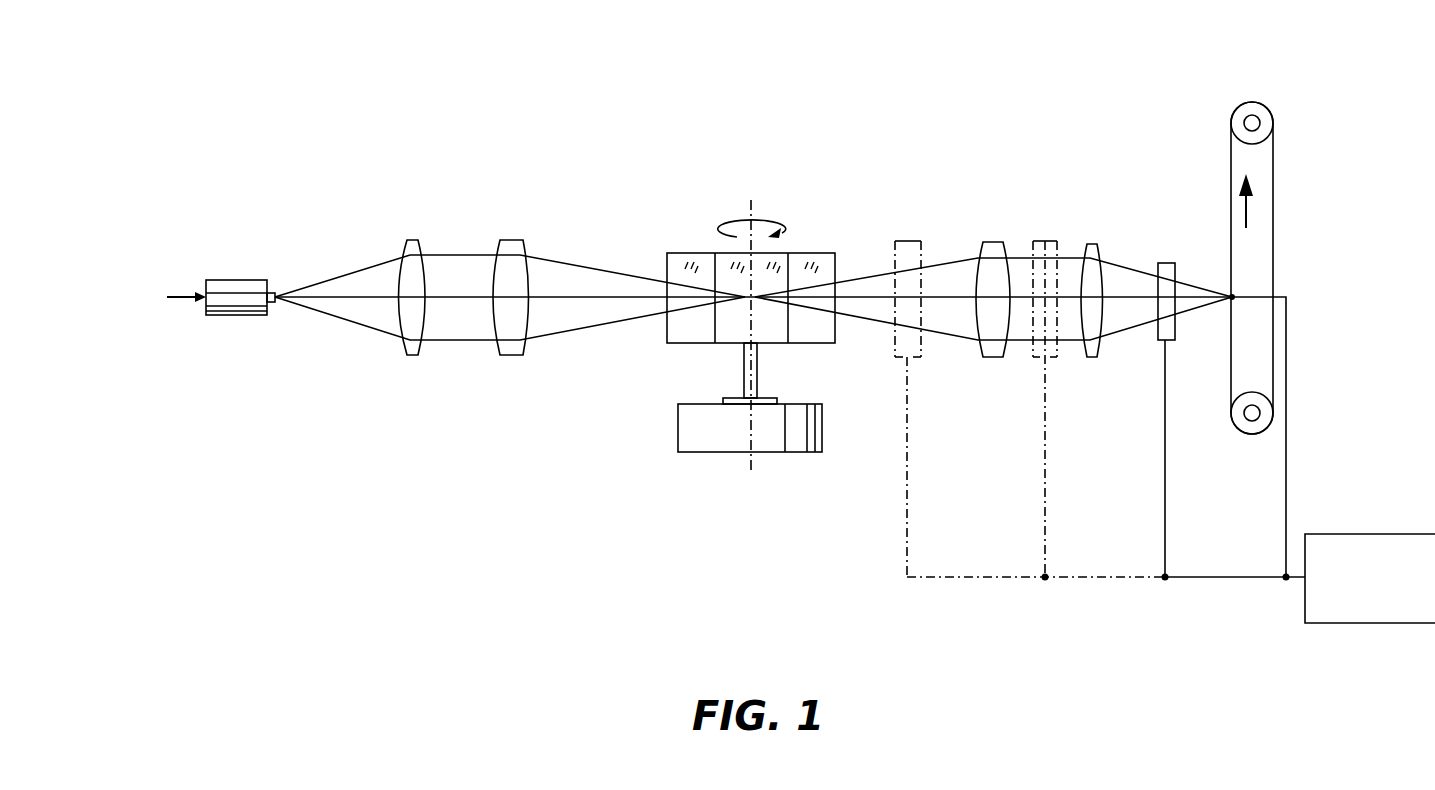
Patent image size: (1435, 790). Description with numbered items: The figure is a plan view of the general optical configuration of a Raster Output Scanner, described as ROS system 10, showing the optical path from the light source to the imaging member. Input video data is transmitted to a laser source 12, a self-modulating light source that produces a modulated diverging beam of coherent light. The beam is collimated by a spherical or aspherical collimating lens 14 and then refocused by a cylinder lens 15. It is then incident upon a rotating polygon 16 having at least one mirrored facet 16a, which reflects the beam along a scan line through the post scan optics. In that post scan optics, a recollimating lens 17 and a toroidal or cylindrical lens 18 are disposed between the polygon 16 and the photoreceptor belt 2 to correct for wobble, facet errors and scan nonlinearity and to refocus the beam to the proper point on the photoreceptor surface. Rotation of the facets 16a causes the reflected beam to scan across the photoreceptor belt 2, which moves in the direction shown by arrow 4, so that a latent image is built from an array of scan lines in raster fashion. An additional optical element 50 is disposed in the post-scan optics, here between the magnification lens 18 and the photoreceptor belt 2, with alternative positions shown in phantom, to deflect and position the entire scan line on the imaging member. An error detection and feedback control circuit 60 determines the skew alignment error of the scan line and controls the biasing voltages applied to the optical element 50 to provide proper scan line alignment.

The photoreceptor belt 2 is at (1273, 256).
The arrow 4 is at (1246, 209).
The ROS system 10 is at (706, 196).
The laser source 12 is at (237, 316).
The collimating lens 14 is at (412, 356).
The cylinder lens 15 is at (510, 356).
The rotating polygon 16 is at (775, 262).
The mirrored facet 16a is at (695, 345).
The recollimating lens 17 is at (993, 242).
The toroidal or cylindrical lens 18 is at (1092, 244).
The optical element 50 is at (1170, 263).
The error detection and feedback control circuit 60 is at (1376, 623).